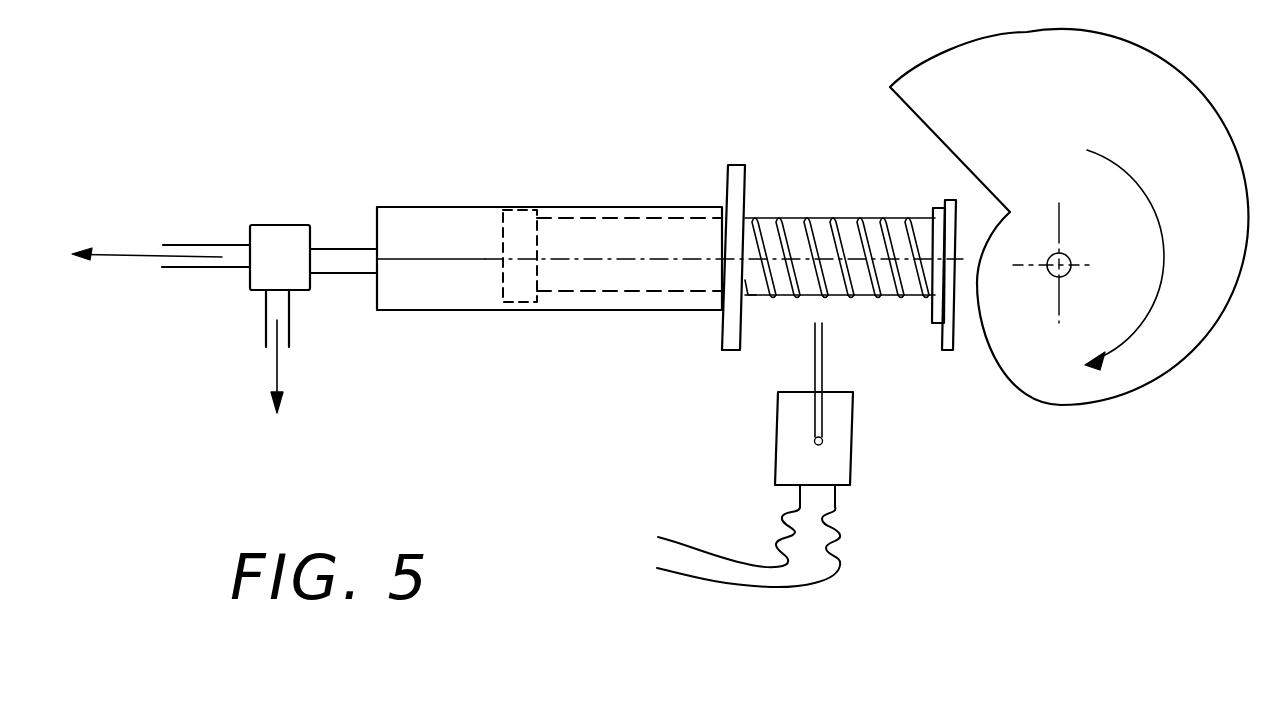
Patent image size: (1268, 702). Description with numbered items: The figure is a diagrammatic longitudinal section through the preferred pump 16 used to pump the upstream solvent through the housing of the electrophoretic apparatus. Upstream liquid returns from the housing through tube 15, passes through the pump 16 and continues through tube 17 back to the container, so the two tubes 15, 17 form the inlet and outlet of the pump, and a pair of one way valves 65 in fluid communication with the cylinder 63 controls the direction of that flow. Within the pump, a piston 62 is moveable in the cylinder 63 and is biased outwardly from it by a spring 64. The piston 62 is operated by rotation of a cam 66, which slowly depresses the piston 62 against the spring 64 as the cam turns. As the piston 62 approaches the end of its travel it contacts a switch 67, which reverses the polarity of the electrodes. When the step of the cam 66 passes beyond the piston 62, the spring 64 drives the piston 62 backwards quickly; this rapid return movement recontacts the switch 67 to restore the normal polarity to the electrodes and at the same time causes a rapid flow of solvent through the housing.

The tube 15 is at (290, 333).
The pump 16 is at (538, 330).
The tube 17 is at (203, 248).
The piston 62 is at (820, 213).
The cylinder 63 is at (563, 228).
The spring 64 is at (880, 302).
The one way valves 65 is at (283, 230).
The cam 66 is at (1028, 368).
The switch 67 is at (840, 455).